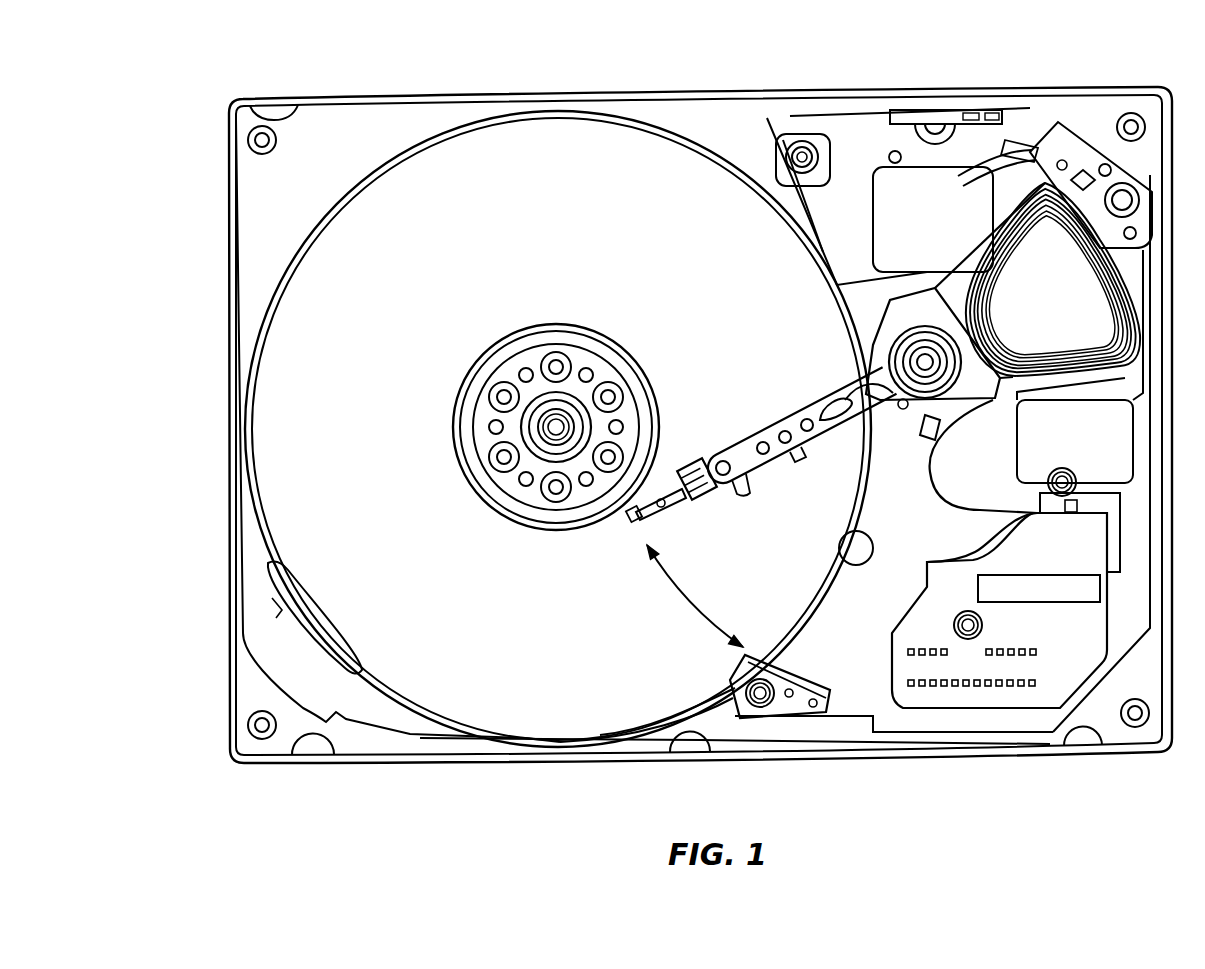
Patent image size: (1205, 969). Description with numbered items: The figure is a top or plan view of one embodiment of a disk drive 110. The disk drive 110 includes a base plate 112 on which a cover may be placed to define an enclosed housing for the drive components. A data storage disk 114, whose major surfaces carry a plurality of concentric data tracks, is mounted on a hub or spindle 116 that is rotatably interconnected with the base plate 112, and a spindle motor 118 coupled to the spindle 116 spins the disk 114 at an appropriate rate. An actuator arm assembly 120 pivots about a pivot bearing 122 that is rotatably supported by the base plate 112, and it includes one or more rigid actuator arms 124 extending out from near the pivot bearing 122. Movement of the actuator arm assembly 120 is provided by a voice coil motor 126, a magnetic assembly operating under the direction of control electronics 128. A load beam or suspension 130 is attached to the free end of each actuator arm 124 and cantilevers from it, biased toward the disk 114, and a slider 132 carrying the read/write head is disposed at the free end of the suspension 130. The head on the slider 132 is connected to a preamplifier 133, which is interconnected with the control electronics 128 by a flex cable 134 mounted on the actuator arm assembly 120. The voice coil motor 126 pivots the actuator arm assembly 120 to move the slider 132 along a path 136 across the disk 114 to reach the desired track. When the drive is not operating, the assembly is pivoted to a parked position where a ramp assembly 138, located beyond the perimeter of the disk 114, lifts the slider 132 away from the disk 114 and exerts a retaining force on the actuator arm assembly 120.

The disk drive 110 is at (166, 196).
The base plate 112 is at (430, 95).
The data storage disk 114 is at (570, 143).
The spindle 116 is at (588, 326).
The spindle motor 118 is at (530, 398).
The actuator arm assembly 120 is at (802, 388).
The pivot bearing 122 is at (918, 385).
The actuator arm 124 is at (780, 468).
The voice coil motor 126 is at (1053, 279).
The control electronics 128 is at (977, 695).
The suspension 130 is at (672, 474).
The slider 132 is at (628, 532).
The preamplifier 133 is at (927, 425).
The flex cable 134 is at (935, 510).
The path 136 is at (688, 610).
The ramp assembly 138 is at (790, 716).